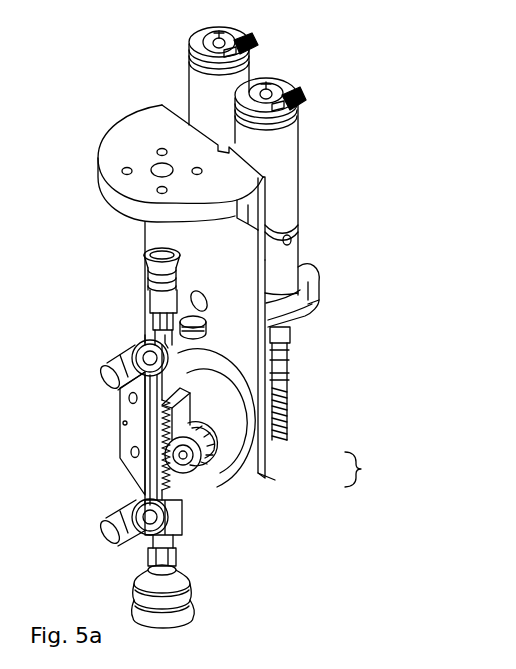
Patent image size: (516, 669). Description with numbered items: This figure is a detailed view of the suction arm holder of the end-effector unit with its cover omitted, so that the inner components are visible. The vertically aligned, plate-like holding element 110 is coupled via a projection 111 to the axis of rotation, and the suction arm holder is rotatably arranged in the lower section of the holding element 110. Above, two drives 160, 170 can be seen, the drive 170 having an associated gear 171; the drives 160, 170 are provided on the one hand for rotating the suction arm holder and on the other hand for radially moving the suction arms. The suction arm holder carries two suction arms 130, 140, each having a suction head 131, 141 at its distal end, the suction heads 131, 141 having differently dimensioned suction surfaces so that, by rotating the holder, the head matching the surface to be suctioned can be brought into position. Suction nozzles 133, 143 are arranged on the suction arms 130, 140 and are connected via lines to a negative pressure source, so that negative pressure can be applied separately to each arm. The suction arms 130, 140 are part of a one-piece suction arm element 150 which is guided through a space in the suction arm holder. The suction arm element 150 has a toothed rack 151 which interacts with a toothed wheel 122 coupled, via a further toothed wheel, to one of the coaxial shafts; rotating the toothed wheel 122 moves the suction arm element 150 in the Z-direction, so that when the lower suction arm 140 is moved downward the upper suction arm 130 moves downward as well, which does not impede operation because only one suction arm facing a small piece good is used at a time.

The holding element 110 is at (238, 278).
The projection 111 is at (147, 125).
The toothed wheel 122 is at (172, 462).
The suction arm 130 is at (235, 397).
The suction head 131 is at (152, 302).
The suction nozzle 133 is at (127, 360).
The suction arm 140 is at (177, 505).
The suction head 141 is at (167, 568).
The suction nozzle 143 is at (122, 530).
The suction arm element 150 is at (370, 469).
The toothed rack 151 is at (160, 406).
The drive 160 is at (218, 82).
The drive 170 is at (272, 142).
The gear 171 is at (282, 263).